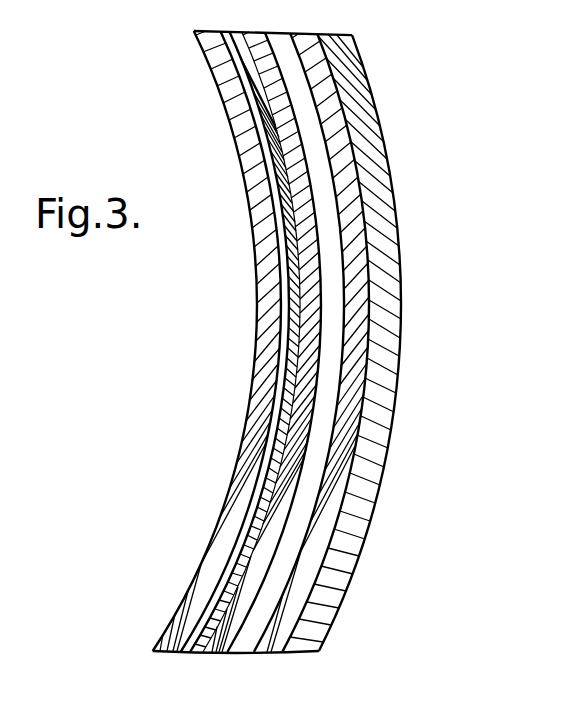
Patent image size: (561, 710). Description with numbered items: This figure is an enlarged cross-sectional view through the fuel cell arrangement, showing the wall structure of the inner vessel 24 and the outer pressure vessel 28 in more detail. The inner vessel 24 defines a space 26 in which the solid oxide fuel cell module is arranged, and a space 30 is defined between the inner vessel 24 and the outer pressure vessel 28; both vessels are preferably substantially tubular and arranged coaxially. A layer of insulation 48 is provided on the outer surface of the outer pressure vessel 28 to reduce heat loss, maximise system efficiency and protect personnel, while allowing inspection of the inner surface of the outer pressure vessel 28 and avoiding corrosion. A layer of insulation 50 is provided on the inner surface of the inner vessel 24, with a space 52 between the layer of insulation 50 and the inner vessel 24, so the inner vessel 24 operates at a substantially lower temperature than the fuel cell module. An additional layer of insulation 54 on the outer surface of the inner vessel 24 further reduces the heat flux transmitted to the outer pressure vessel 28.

The inner vessel 24 is at (283, 395).
The space 26 is at (154, 459).
The outer pressure vessel 28 is at (328, 105).
The space 30 is at (320, 451).
The layer of insulation 48 is at (381, 267).
The layer of insulation 50 is at (228, 530).
The space 52 is at (193, 632).
The additional layer of insulation 54 is at (283, 492).